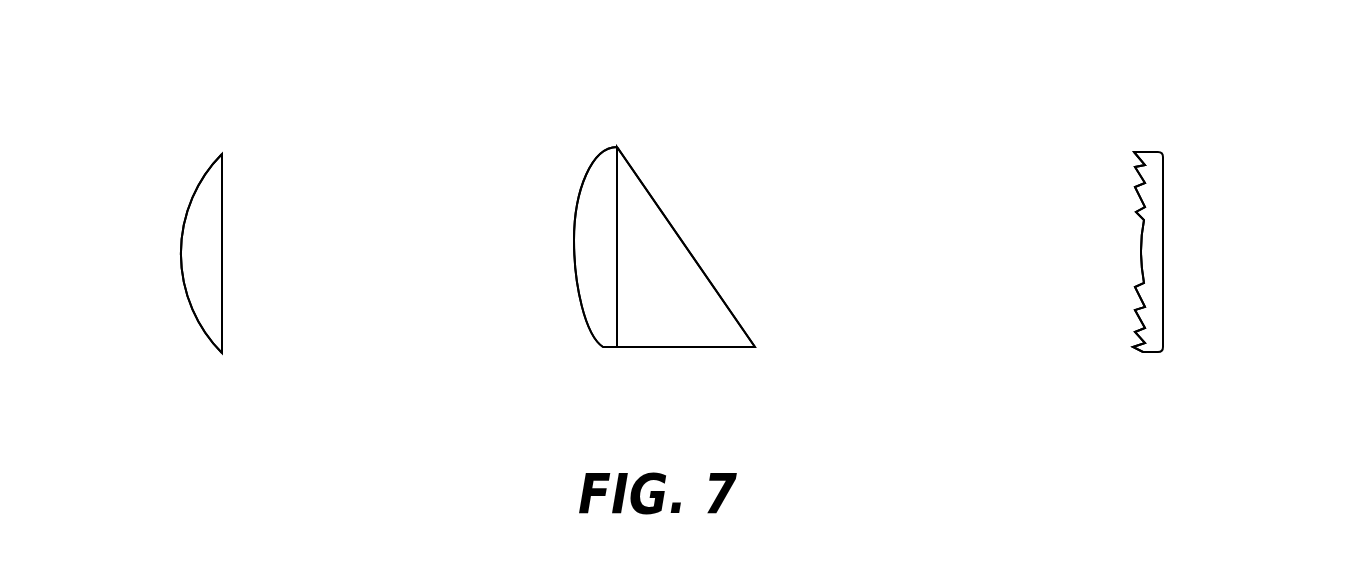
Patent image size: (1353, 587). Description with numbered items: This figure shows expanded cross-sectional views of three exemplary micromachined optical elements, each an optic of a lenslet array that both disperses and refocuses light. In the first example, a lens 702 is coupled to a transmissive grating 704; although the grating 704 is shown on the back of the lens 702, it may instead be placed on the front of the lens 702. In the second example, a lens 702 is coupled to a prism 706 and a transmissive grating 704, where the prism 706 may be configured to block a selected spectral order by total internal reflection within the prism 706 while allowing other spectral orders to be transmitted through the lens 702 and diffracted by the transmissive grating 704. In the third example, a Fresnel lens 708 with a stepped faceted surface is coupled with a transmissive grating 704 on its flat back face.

The lens 702 is at (181, 234).
The transmissive grating 704 is at (222, 192).
The prism 706 is at (660, 265).
The Fresnel lens 708 is at (1140, 250).